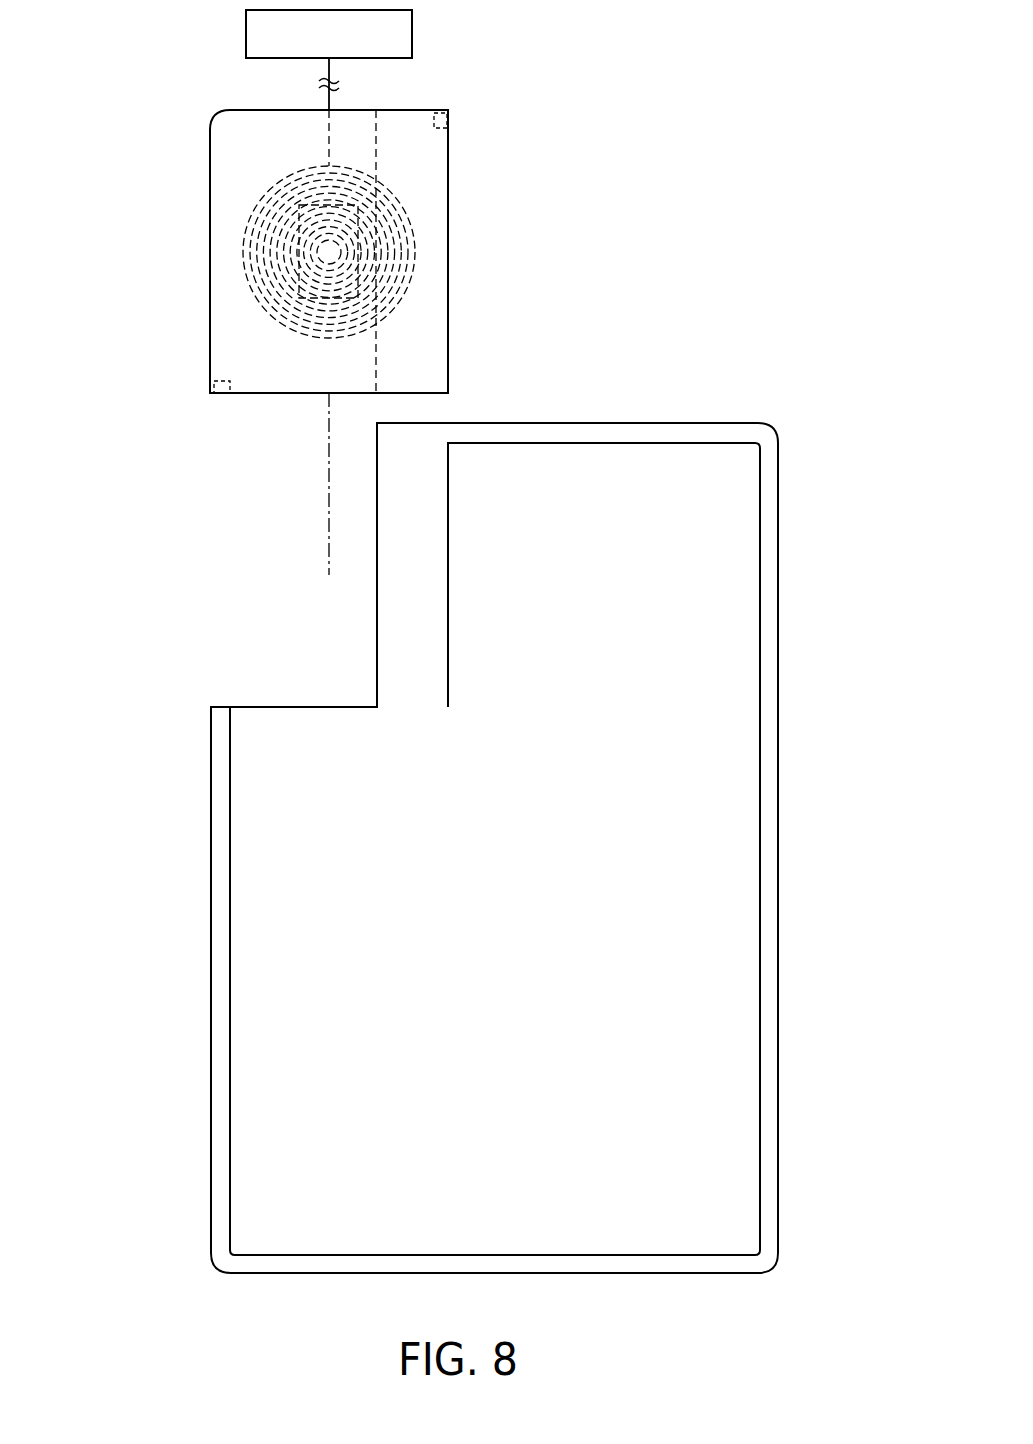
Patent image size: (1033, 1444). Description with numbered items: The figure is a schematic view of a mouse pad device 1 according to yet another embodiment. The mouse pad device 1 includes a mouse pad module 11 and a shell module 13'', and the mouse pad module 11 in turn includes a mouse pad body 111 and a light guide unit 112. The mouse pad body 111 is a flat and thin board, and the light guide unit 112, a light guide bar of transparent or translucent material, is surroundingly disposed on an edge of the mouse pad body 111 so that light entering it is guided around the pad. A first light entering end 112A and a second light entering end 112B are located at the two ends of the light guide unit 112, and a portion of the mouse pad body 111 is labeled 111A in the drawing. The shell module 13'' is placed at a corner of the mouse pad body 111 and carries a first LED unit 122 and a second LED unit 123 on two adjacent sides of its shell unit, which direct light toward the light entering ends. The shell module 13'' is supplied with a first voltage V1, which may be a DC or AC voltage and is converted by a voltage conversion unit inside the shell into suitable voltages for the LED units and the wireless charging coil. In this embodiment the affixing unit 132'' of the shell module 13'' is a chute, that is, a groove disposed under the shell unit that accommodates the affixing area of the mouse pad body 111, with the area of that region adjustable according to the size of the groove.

The mouse pad device 1 is at (666, 110).
The first voltage V1 is at (412, 31).
The mouse pad module 11 is at (688, 423).
The mouse pad body 111 is at (268, 977).
The light guide unit 112 is at (220, 1080).
The extension portion 111A is at (397, 523).
The first light entering end 112A is at (448, 425).
The second light entering end 112B is at (222, 707).
The shell module 13'' is at (367, 342).
The first LED unit 122 is at (450, 118).
The second LED unit 123 is at (216, 396).
The affixing unit 132'' is at (333, 281).